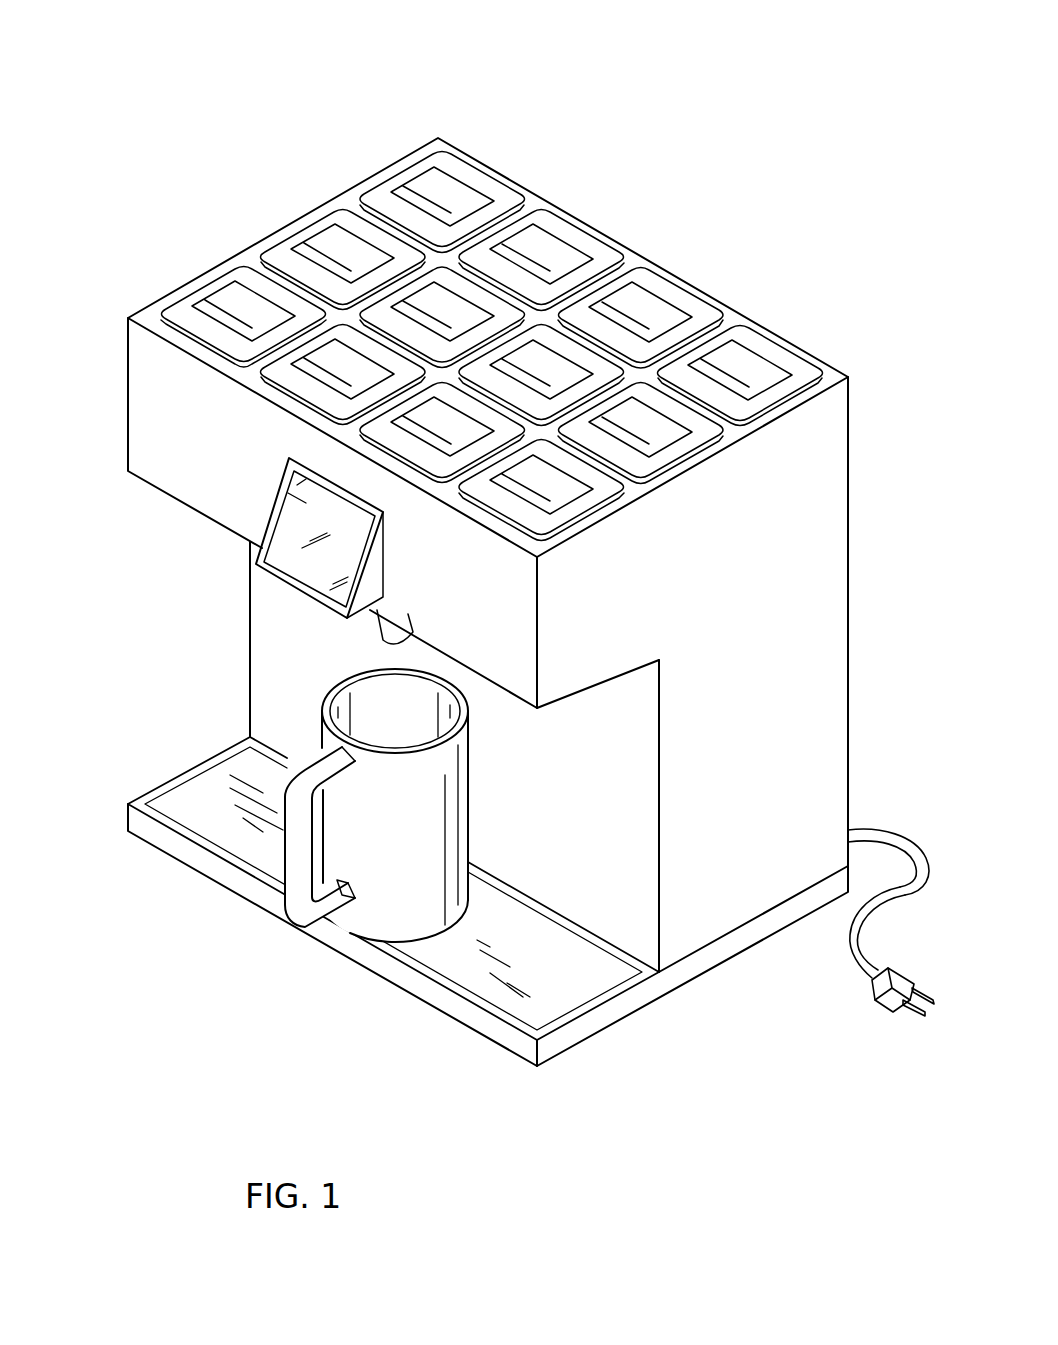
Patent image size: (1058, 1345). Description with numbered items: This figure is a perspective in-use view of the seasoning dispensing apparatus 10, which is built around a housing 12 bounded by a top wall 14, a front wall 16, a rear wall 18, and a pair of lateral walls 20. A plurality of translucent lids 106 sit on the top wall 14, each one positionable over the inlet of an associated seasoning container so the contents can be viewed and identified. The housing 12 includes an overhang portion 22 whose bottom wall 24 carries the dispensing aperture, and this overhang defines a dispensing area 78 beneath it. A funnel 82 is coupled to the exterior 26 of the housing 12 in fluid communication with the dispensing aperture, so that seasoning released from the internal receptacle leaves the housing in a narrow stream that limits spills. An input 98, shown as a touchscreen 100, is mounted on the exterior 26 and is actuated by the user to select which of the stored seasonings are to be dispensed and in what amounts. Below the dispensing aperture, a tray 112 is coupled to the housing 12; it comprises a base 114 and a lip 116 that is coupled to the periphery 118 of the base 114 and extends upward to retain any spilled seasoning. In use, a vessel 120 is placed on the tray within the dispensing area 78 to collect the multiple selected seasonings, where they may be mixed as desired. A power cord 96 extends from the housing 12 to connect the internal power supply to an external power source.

The seasoning dispensing apparatus 10 is at (798, 110).
The housing 12 is at (882, 378).
The top wall 14 is at (731, 318).
The front wall 16 is at (137, 365).
The rear wall 18 is at (848, 536).
The lateral walls 20 is at (250, 597).
The overhang portion 22 is at (561, 658).
The bottom wall 24 is at (602, 684).
The exterior 26 is at (823, 804).
The dispensing area 78 is at (237, 714).
The funnel 82 is at (380, 634).
The power cord 96 is at (849, 955).
The input 98 is at (262, 498).
The touchscreen 100 is at (305, 504).
The lids 106 is at (440, 281).
The tray 112 is at (540, 1084).
The base 114 is at (485, 962).
The lip 116 is at (591, 1001).
The periphery 118 is at (182, 792).
The vessel 120 is at (383, 887).